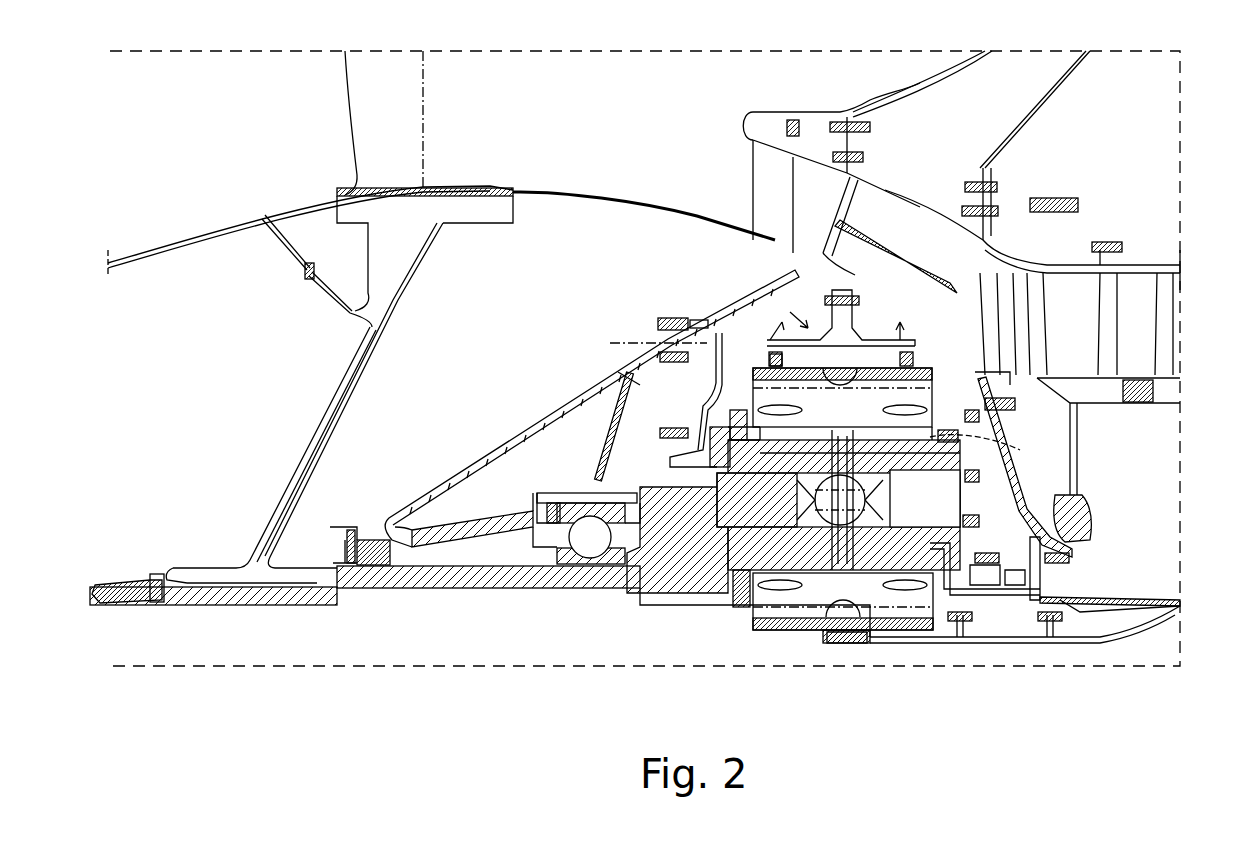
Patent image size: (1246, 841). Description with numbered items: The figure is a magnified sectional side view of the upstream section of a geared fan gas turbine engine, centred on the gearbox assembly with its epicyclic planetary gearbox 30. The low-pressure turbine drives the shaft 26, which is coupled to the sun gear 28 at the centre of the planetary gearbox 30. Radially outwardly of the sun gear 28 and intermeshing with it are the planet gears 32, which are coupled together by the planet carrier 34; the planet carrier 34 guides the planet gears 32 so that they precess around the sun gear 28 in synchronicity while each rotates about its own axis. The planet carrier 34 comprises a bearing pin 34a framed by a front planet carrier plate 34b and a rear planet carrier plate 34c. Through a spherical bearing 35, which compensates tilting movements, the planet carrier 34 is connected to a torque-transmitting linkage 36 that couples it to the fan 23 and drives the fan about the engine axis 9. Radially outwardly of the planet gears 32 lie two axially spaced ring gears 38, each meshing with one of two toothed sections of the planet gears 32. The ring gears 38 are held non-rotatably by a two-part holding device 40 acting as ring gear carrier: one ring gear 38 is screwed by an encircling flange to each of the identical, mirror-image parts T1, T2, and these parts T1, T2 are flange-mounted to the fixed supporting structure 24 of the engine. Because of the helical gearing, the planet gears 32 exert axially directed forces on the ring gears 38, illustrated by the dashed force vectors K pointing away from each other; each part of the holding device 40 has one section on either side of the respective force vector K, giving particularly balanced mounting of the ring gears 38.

The engine axis 9 is at (528, 668).
The fan 23 is at (382, 88).
The fixed supporting structure 24 is at (905, 222).
The shaft 26 is at (903, 643).
The sun gear 28 is at (787, 623).
The epicyclic planetary gearbox 30 is at (713, 622).
The planet gears 32 is at (710, 400).
The planet carrier 34 is at (982, 467).
The bearing pin 34a is at (930, 437).
The front planet carrier plate 34b is at (670, 505).
The rear planet carrier plate 34c is at (983, 597).
The spherical bearing 35 is at (897, 493).
The linkage 36 is at (650, 570).
The ring gears 38 is at (755, 365).
The holding device 40 is at (765, 300).
The force vectors K is at (752, 282).
The first part of the holding device T1 is at (813, 322).
The second part of the holding device T2 is at (922, 290).